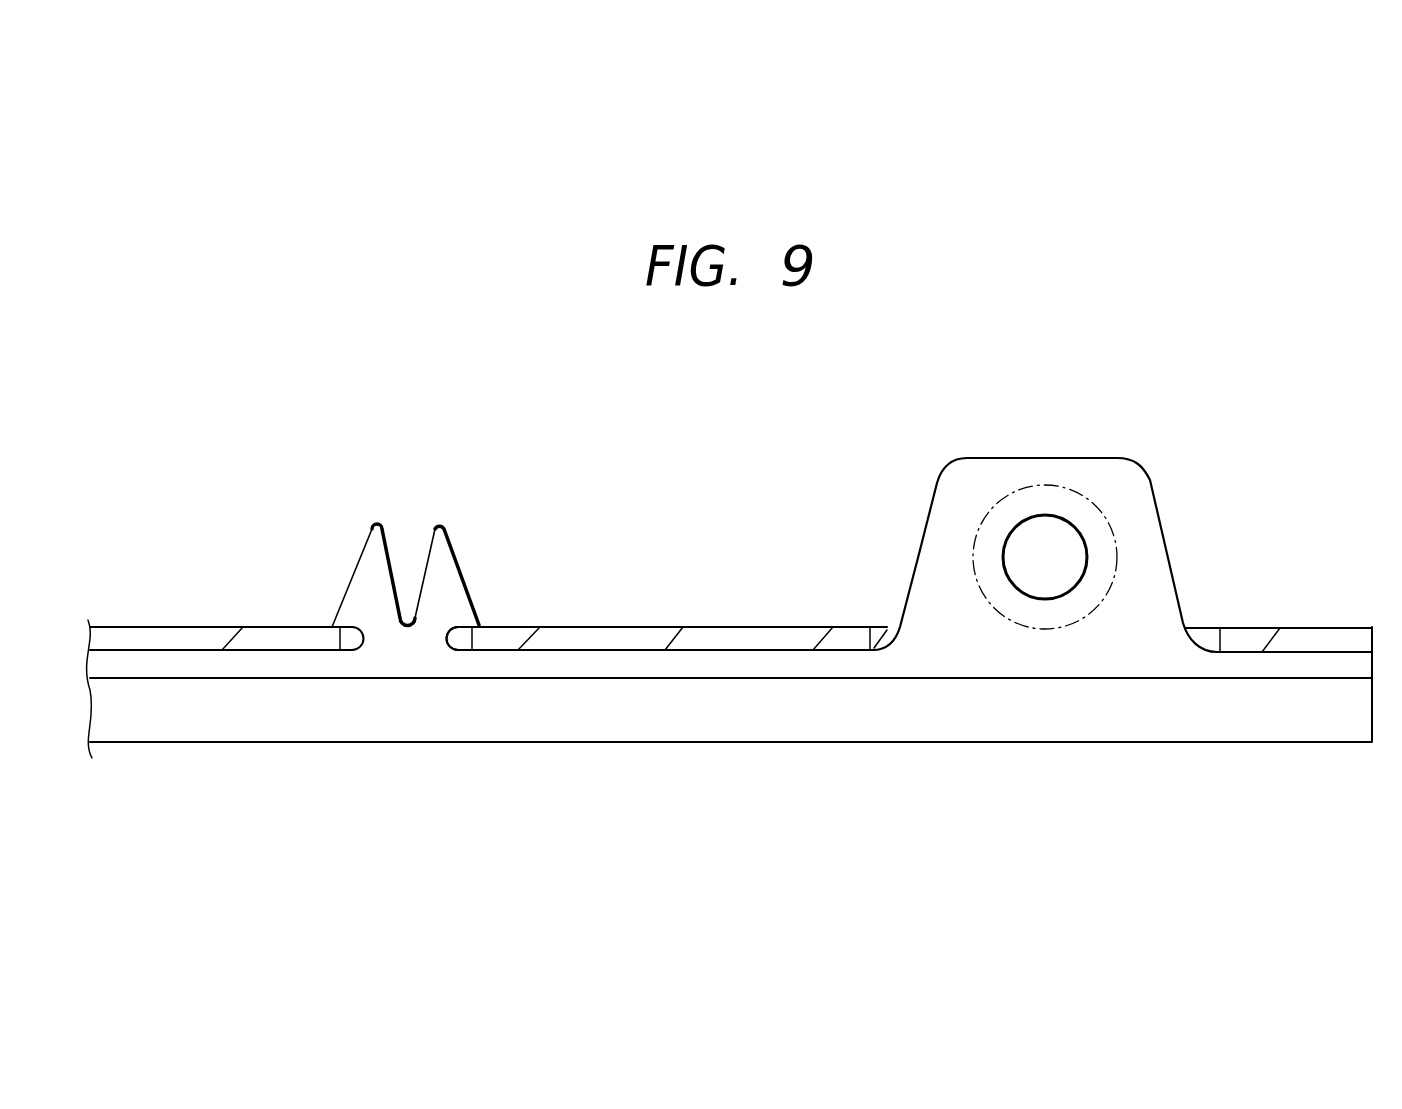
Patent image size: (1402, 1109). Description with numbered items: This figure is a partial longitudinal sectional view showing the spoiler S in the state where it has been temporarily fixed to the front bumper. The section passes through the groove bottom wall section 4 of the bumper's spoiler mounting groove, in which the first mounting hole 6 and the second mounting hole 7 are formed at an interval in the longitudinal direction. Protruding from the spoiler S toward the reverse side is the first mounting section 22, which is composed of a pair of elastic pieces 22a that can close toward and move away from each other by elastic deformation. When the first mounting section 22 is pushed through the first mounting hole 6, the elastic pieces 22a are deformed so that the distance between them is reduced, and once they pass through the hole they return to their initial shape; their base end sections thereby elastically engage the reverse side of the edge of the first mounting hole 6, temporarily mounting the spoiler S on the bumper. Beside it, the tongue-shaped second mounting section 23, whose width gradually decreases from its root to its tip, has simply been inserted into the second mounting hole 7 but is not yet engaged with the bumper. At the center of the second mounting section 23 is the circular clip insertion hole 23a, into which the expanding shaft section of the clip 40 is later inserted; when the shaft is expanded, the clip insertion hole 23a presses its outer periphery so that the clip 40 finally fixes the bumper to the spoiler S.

The spoiler S is at (570, 743).
The groove bottom wall section 4 is at (633, 637).
The first mounting hole 6 is at (464, 640).
The second mounting hole 7 is at (888, 625).
The first mounting section 22 is at (402, 507).
The elastic pieces 22a is at (438, 523).
The second mounting section 23 is at (1130, 492).
The clip insertion hole 23a is at (1017, 527).
The clip 40 is at (1107, 518).